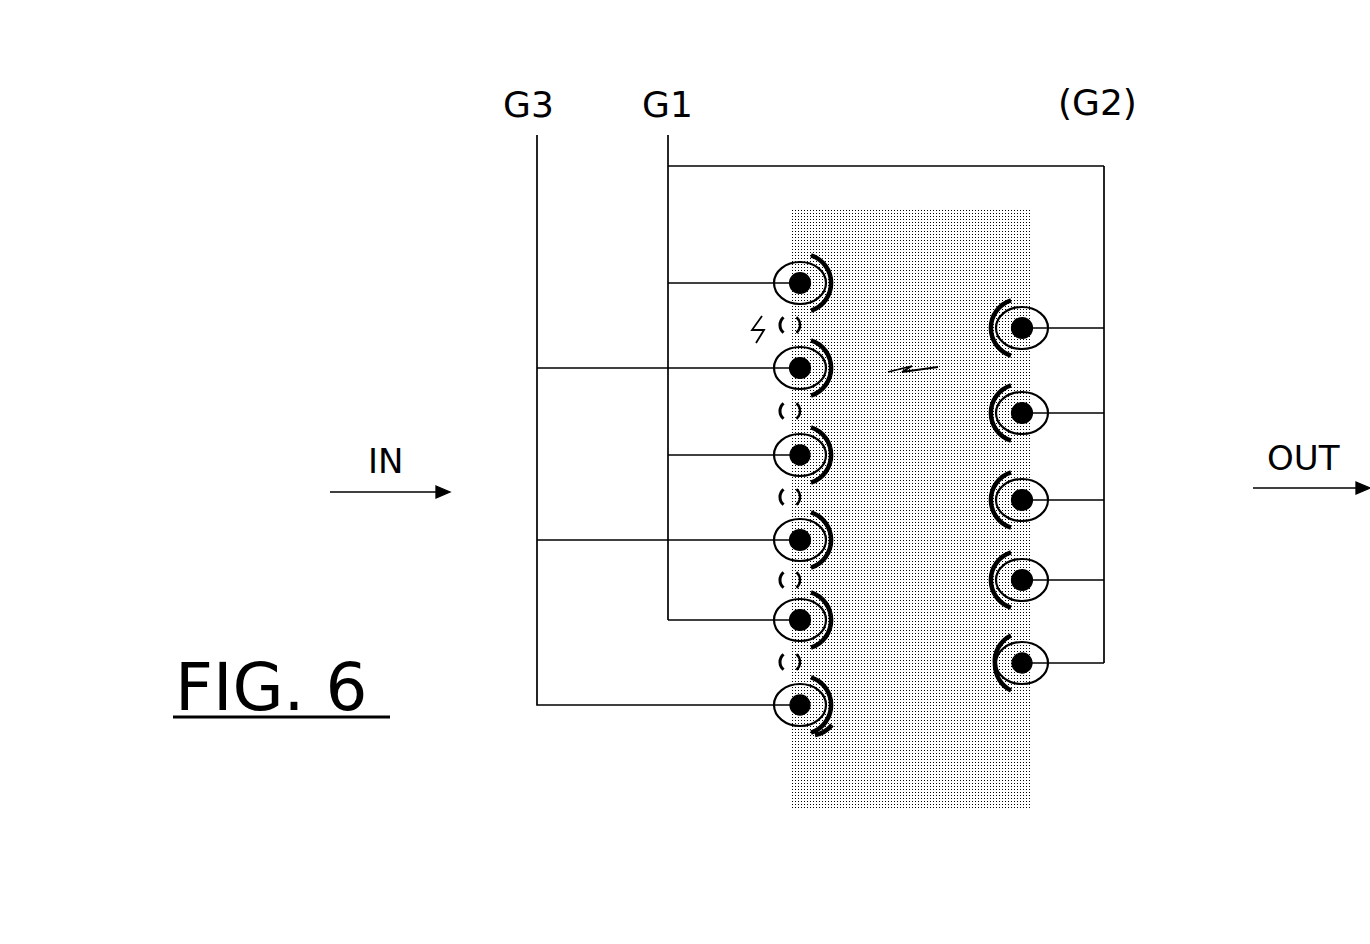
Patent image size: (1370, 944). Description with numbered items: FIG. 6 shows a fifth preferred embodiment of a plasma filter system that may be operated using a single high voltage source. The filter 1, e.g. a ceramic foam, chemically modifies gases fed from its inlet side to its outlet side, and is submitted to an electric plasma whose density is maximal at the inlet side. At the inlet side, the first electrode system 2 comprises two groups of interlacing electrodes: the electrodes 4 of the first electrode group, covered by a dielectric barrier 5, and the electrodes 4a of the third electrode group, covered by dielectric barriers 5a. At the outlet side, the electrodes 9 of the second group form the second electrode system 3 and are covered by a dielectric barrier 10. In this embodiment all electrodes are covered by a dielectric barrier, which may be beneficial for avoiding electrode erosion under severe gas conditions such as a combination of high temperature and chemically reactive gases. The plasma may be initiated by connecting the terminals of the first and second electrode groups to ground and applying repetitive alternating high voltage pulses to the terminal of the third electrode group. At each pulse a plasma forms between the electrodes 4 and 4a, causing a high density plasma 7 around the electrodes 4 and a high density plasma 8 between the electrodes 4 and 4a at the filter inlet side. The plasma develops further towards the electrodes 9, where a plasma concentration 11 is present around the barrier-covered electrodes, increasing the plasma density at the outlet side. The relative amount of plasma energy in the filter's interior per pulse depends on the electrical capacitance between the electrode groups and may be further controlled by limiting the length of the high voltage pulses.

The filter 1 is at (913, 786).
The first electrode system 2 is at (670, 571).
The second electrode system 3 is at (1081, 589).
The electrodes of the first electrode group 4 is at (795, 458).
The dielectric barrier 5 is at (806, 478).
The electrodes of the third electrode group 4a is at (785, 712).
The dielectric barrier 5a is at (772, 718).
The high density plasma 7 is at (838, 735).
The high density plasma 8 is at (768, 664).
The electrodes of the second group 9 is at (1030, 668).
The dielectric barrier 10 is at (1033, 682).
The plasma concentration 11 is at (990, 678).